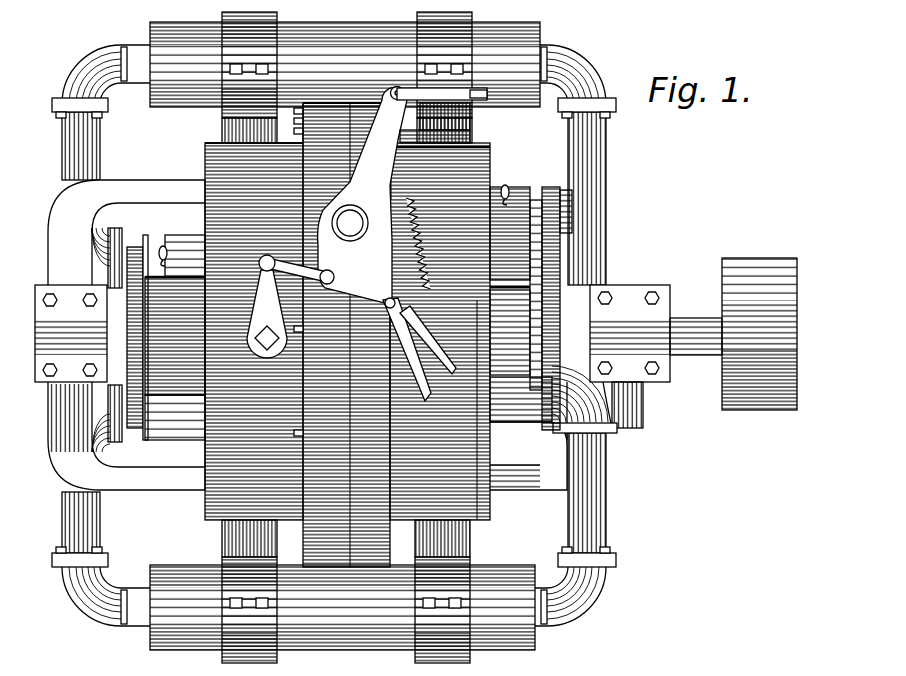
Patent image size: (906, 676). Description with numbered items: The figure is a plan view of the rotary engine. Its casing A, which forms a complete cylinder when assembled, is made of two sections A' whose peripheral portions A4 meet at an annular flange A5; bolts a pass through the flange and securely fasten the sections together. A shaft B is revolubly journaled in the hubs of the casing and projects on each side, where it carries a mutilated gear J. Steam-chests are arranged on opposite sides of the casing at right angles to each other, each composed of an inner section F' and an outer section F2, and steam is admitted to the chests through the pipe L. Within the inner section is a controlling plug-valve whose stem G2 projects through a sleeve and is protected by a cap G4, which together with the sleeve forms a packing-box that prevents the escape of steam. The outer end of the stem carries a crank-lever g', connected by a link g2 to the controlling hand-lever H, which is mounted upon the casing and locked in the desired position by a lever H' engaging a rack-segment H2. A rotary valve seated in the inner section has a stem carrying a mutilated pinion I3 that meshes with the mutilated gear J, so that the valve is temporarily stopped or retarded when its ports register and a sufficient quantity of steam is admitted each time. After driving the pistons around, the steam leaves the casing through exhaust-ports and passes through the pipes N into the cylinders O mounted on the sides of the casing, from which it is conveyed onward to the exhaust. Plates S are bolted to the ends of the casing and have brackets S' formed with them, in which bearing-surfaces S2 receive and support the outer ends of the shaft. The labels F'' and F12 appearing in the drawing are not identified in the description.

The cylinder O is at (345, 337).
The pipe N is at (96, 152).
The casing A is at (333, 335).
The casing section A' is at (242, 139).
The annular flange A5 is at (346, 235).
The peripheral portion A4 is at (454, 410).
The bolt a is at (303, 134).
The controlling hand-lever H is at (362, 196).
The locking lever H' is at (419, 334).
The rack-segment H2 is at (411, 224).
The valve-stem G2 is at (424, 112).
The cap G4 is at (470, 136).
The crank-lever g' is at (366, 223).
The link g2 is at (298, 268).
The gear F'' is at (440, 166).
The outer section of steam-chest F2 is at (528, 187).
The gear F12 is at (175, 337).
The inner section of steam-chest F' is at (177, 335).
The steam pipe L is at (178, 237).
The mutilated pinion I3 is at (574, 210).
The mutilated gear J is at (560, 258).
The plate S is at (293, 335).
The bracket S' is at (406, 435).
The bearing-surface S2 is at (46, 384).
The shaft B is at (553, 361).